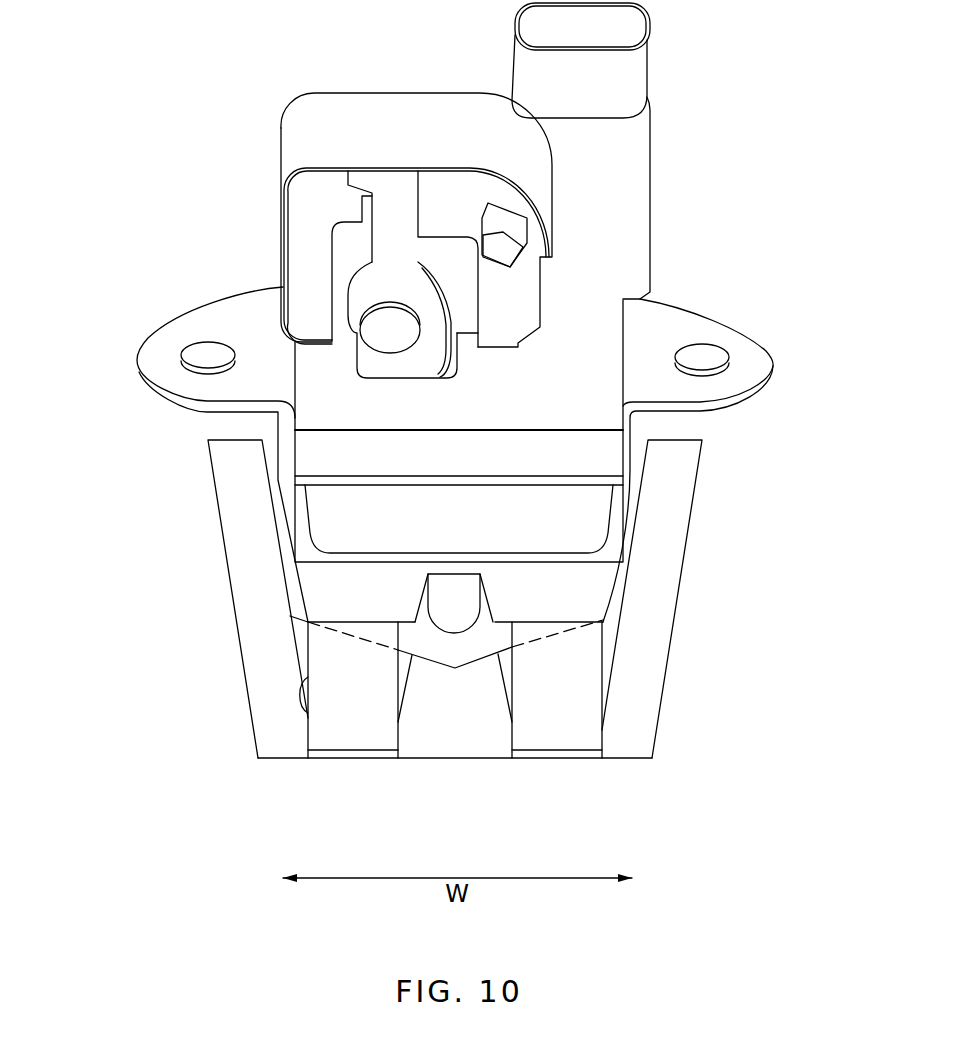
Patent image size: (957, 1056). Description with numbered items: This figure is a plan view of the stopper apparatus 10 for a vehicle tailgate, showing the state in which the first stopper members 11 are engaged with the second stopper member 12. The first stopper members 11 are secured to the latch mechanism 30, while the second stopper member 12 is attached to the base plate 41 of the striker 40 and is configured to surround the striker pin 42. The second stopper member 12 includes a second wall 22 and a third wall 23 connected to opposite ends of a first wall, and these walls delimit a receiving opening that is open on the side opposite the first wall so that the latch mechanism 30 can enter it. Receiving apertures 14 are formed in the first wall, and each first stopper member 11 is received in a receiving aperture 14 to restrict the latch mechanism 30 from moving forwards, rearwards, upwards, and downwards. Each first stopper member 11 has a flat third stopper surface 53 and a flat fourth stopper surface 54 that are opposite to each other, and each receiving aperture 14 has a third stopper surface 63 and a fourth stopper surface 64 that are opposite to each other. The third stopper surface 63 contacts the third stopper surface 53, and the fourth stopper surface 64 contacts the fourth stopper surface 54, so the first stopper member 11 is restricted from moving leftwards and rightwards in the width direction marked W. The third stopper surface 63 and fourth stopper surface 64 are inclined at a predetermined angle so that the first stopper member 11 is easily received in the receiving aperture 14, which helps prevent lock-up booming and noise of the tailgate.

The stopper apparatus 10 is at (36, 431).
The latch mechanism 30 is at (649, 316).
The second stopper member 12 is at (208, 594).
The second wall 22 is at (233, 497).
The third wall 23 is at (680, 477).
The striker pin 42 is at (472, 597).
The striker 40 is at (600, 603).
The base plate 41 is at (323, 757).
The receiving aperture 14 is at (540, 753).
The first stopper member 11 is at (353, 743).
The third stopper surface 53 is at (310, 643).
The third stopper surface 63 is at (310, 713).
The fourth stopper surface 54 is at (397, 670).
The fourth stopper surface 64 is at (402, 698).